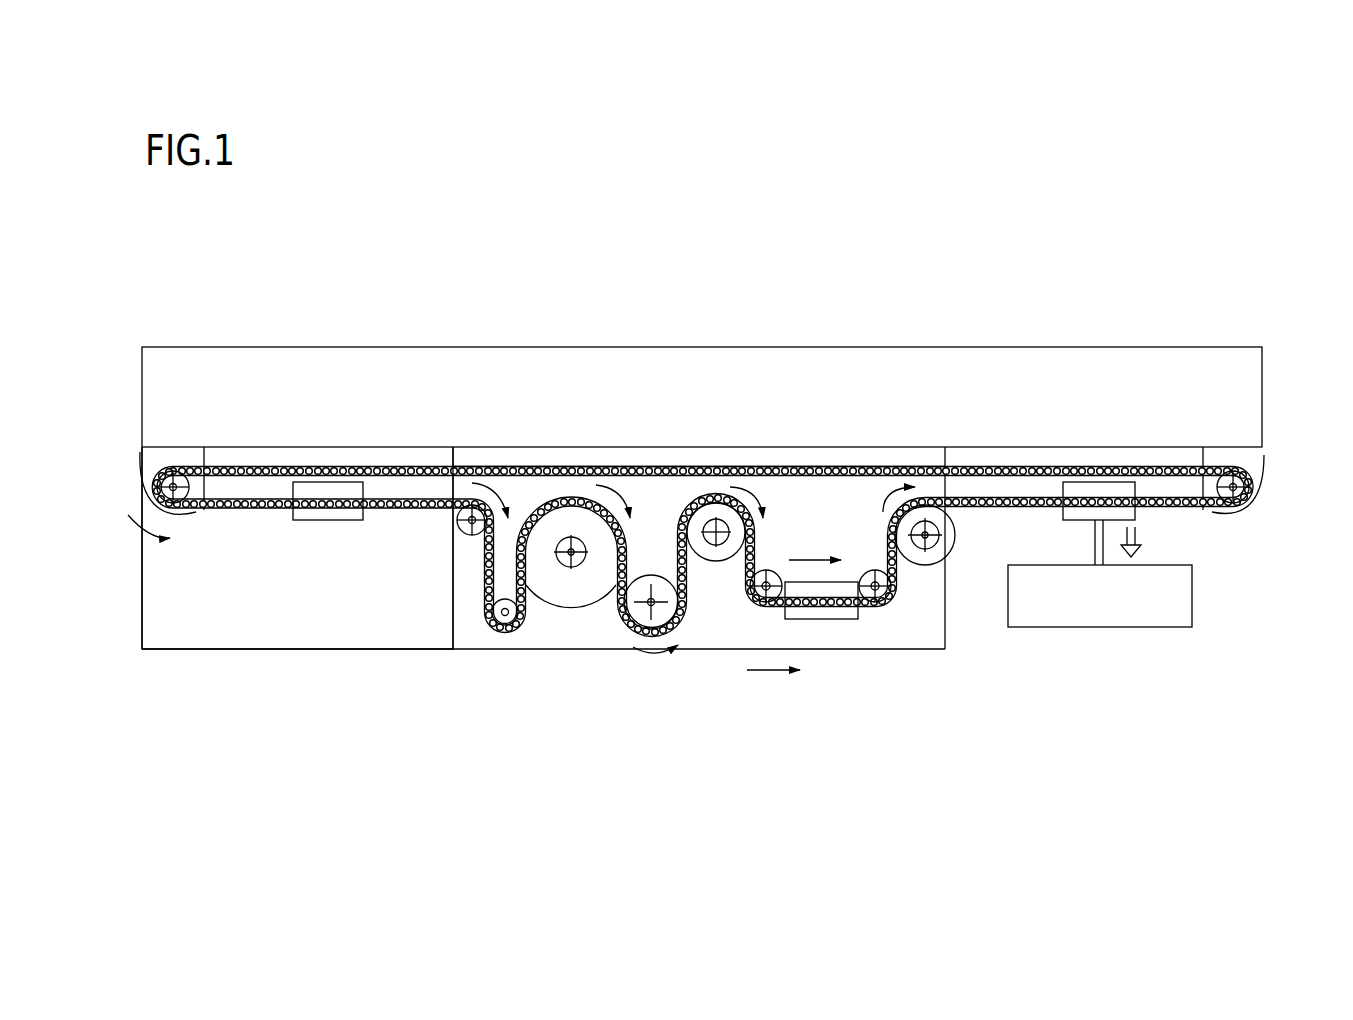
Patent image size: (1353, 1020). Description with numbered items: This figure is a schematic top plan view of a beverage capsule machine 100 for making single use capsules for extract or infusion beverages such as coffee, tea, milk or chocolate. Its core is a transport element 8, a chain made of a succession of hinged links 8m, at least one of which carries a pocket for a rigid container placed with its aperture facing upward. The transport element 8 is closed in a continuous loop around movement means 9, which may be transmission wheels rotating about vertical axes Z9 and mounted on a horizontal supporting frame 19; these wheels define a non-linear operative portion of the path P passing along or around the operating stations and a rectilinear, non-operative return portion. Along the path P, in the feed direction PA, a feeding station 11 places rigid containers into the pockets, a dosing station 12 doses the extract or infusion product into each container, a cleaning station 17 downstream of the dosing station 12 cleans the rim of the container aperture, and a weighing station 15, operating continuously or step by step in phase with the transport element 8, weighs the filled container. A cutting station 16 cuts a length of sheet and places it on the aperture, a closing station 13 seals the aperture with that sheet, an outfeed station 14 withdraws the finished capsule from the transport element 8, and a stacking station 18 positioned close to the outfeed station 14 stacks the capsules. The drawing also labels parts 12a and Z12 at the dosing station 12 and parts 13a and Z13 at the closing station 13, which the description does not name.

The machine 100 is at (771, 306).
The transport element 8 is at (799, 453).
The chain links 8m is at (506, 462).
The movement means 9 is at (178, 482).
The axes of the movement means Z9 is at (157, 475).
The path P is at (150, 522).
The feed direction PA is at (773, 690).
The feeding station 11 is at (293, 525).
The supporting frame 19 is at (196, 615).
The dosing station 12 is at (578, 614).
The drum axis 12a is at (556, 570).
The zone of drum 12 Z12 is at (568, 548).
The cleaning station 17 is at (656, 573).
The weighing station 15 is at (712, 490).
The cutting station 16 is at (843, 628).
The closing station 13 is at (958, 563).
The pulley hub 13a is at (919, 563).
The zone of pulley 13 Z13 is at (930, 530).
The outfeed station 14 is at (1100, 487).
The stacking station 18 is at (1097, 636).